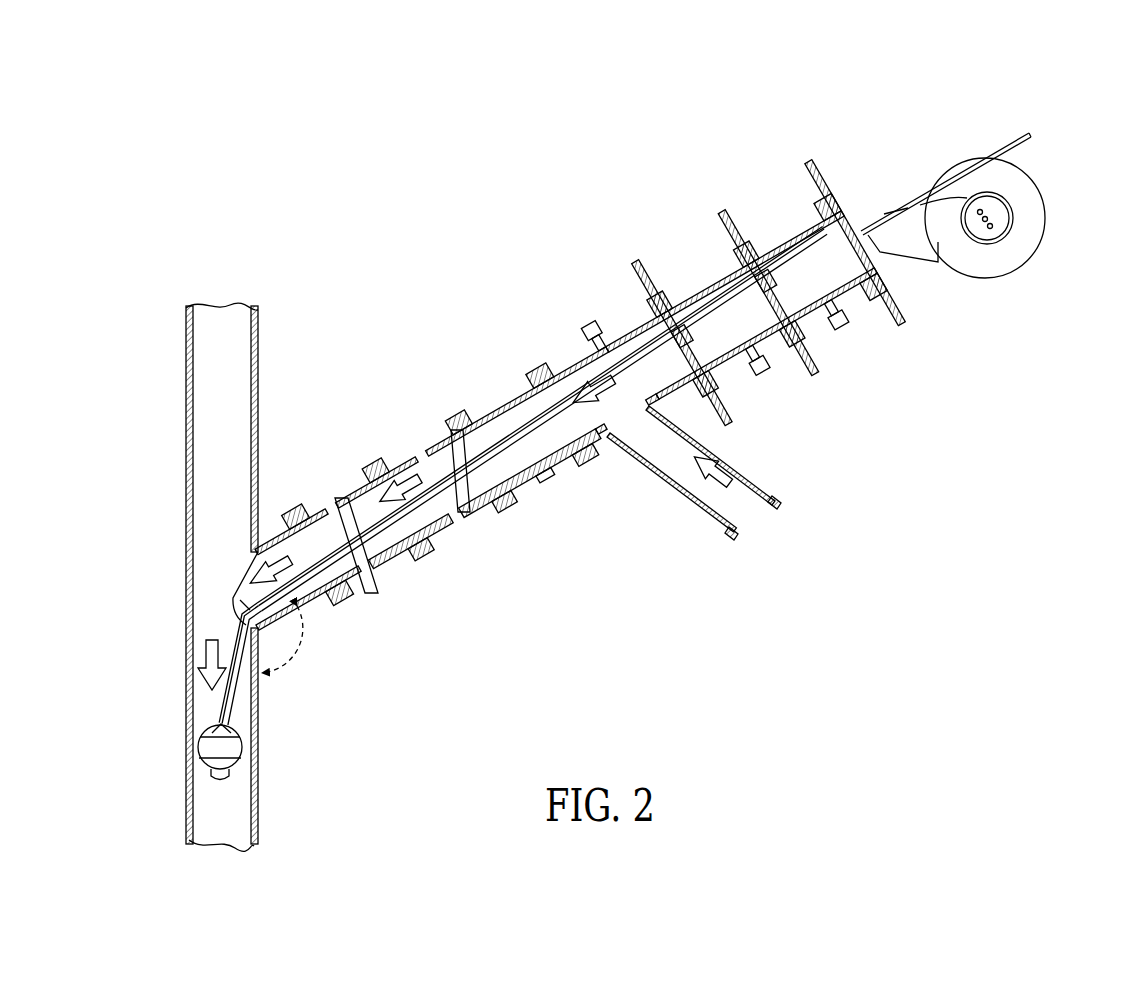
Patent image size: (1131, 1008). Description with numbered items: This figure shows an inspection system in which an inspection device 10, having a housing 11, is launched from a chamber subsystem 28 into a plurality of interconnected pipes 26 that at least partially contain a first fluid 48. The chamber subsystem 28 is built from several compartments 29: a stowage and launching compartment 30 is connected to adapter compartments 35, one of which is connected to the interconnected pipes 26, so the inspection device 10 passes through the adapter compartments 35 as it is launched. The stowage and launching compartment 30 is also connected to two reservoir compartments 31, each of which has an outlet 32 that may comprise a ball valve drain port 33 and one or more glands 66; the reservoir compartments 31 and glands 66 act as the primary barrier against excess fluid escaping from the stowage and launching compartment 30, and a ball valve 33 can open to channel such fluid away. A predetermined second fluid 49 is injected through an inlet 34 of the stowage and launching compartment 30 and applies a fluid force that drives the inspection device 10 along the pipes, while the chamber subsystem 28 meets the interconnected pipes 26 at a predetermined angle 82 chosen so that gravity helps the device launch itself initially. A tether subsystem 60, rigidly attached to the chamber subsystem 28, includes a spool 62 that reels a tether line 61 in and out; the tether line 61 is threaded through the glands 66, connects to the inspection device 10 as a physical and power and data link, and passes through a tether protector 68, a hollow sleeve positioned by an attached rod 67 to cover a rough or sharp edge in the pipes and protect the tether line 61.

The inspection device 10 is at (211, 756).
The housing 11 is at (207, 748).
The plurality of interconnected pipes 26 is at (182, 640).
The chamber subsystem 28 is at (496, 293).
The compartments 29 is at (348, 570).
The stowage and launching compartment 30 is at (645, 396).
The reservoir compartments 31 is at (727, 300).
The outlet 32 is at (717, 325).
The ball valve drain port 33 is at (593, 328).
The inlet 34 is at (735, 505).
The adapter compartments 35 is at (488, 398).
The first fluid 48 is at (228, 452).
The predetermined second fluid 49 is at (727, 463).
The tether subsystem 60 is at (987, 160).
The tether line 61 is at (214, 712).
The spool 62 is at (1030, 215).
The glands 66 is at (690, 324).
The rod 67 is at (1010, 136).
The tether protector 68 is at (236, 598).
The predetermined angle 82 is at (292, 660).